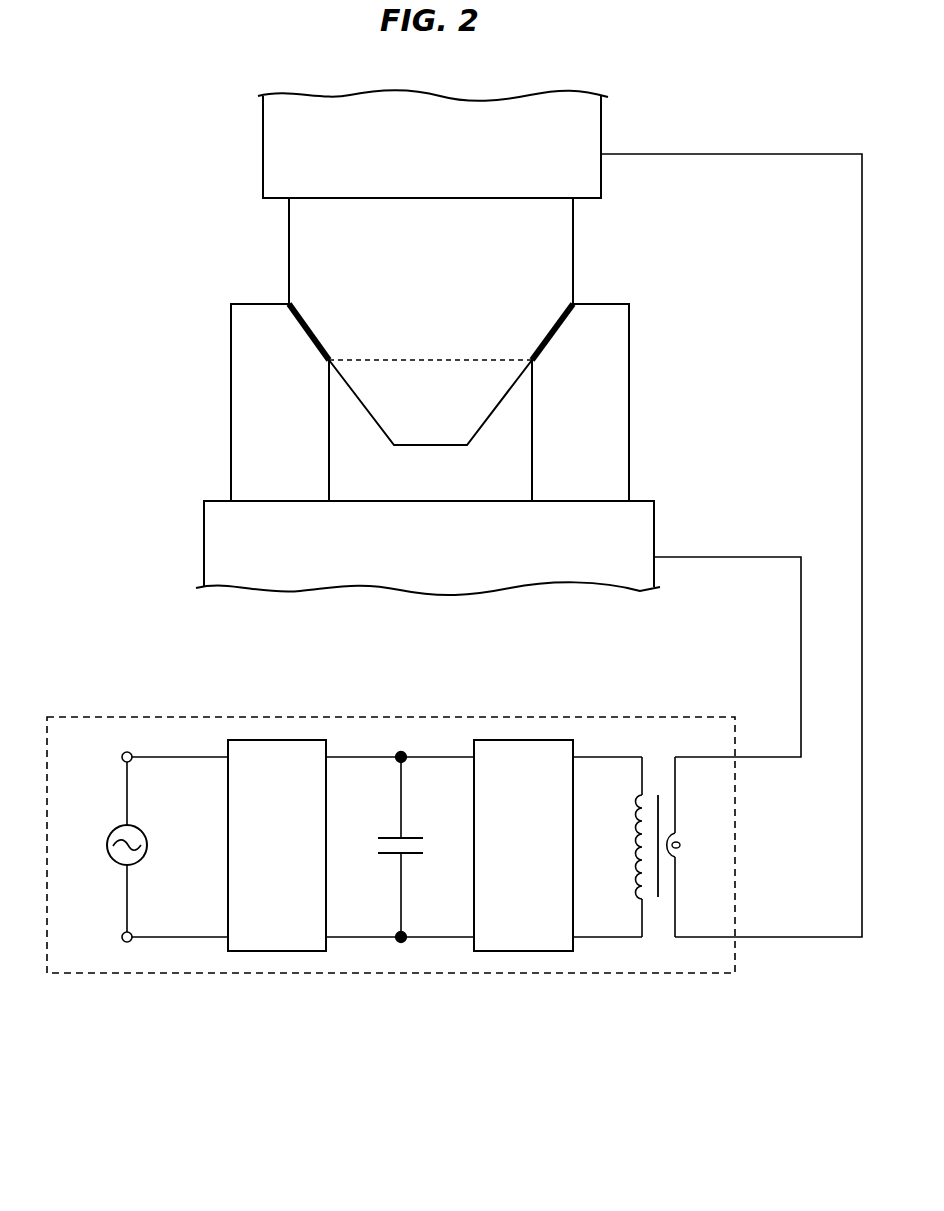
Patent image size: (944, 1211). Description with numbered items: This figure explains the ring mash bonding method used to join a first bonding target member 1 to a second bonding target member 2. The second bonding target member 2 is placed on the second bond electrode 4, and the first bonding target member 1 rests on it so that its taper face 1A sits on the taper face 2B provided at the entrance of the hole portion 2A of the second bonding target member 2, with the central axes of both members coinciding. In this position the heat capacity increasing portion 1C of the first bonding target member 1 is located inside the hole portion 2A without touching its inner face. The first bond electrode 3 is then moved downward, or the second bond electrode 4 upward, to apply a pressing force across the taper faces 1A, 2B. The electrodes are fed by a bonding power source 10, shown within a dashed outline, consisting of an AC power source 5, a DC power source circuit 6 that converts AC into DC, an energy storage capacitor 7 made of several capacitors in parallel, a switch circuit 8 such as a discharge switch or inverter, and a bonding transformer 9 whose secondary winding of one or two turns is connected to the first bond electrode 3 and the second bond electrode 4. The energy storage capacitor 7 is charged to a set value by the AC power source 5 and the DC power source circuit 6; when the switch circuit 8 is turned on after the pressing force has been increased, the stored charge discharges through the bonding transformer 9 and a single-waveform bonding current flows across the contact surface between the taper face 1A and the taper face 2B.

The first bonding target member 1 is at (573, 245).
The taper face 1A is at (315, 327).
The heat capacity increasing portion 1C is at (460, 405).
The second bonding target member 2 is at (231, 413).
The hole portion 2A is at (364, 476).
The taper face 2B is at (322, 348).
The first bond electrode 3 is at (601, 121).
The second bond electrode 4 is at (654, 520).
The AC power source 5 is at (112, 858).
The DC power source circuit 6 is at (278, 951).
The energy storage capacitor 7 is at (416, 857).
The switch circuit 8 is at (522, 951).
The bonding transformer 9 is at (657, 907).
The bonding power source 10 is at (588, 973).